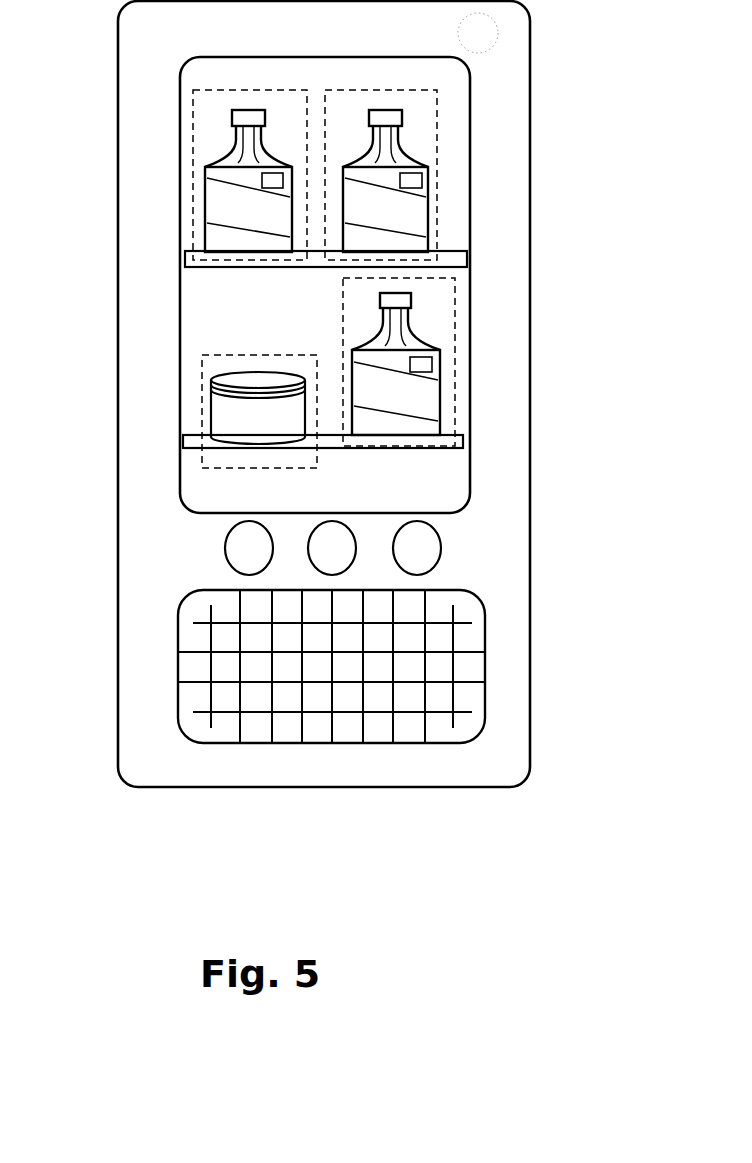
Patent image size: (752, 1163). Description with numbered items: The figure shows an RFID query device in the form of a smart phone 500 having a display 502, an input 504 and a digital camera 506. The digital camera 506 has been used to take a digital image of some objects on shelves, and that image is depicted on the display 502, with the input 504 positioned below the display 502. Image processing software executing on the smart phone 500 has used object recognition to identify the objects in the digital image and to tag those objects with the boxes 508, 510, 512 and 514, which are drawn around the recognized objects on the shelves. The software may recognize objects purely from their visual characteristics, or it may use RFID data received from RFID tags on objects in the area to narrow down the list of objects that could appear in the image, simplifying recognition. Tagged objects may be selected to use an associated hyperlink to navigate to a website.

The smart phone 500 is at (483, 767).
The display 502 is at (470, 280).
The input 504 is at (485, 682).
The digital camera 506 is at (483, 35).
The box 508 is at (455, 403).
The box 510 is at (437, 120).
The box 512 is at (193, 143).
The box 514 is at (205, 383).